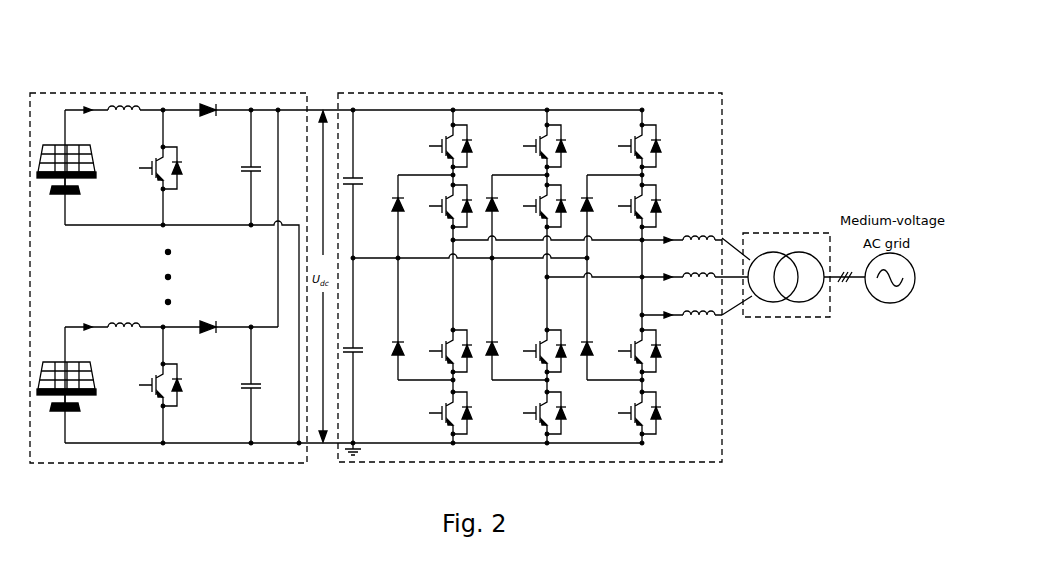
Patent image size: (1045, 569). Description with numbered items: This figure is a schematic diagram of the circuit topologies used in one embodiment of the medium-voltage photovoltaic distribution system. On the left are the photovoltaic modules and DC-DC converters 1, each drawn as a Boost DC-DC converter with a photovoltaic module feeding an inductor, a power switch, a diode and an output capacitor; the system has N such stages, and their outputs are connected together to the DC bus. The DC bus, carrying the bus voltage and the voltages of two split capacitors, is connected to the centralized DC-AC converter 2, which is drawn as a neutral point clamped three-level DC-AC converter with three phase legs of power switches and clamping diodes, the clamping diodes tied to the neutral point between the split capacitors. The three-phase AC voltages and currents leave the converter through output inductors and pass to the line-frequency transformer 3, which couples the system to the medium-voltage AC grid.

The photovoltaic modules and DC-DC converters 1 is at (163, 93).
The centralized DC-AC converter 2 is at (533, 93).
The line-frequency transformer 3 is at (786, 233).